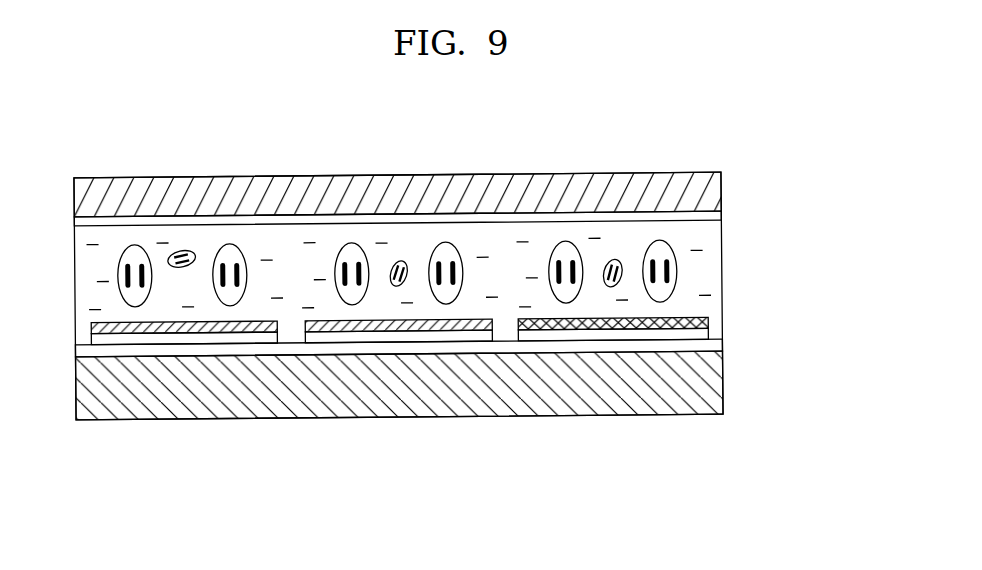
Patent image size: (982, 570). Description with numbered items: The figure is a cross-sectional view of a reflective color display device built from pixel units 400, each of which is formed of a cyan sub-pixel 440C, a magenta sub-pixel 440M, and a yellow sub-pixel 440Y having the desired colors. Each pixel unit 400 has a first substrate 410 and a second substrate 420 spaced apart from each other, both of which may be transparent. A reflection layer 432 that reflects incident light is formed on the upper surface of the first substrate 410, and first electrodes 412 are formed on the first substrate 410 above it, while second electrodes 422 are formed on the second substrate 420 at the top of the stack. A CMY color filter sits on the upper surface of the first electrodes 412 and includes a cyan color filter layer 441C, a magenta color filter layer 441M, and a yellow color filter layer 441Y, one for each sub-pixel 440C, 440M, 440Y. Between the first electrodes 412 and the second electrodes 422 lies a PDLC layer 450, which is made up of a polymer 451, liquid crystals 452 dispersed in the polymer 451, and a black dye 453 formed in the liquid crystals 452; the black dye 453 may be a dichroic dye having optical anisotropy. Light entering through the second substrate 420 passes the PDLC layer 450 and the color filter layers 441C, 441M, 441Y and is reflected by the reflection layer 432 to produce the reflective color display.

The pixel unit 400 is at (738, 162).
The second substrate 420 is at (722, 195).
The second electrode 422 is at (722, 218).
The PDLC layer 450 is at (474, 281).
The polymer 451 is at (704, 253).
The liquid crystals 452 is at (666, 300).
The black dye 453 is at (666, 282).
The cyan sub-pixel 440C is at (78, 155).
The magenta sub-pixel 440M is at (293, 156).
The yellow sub-pixel 440Y is at (717, 157).
The cyan color filter layer 441C is at (151, 326).
The magenta color filter layer 441M is at (365, 326).
The yellow color filter layer 441Y is at (578, 326).
The first electrode 412 is at (233, 337).
The reflection layer 432 is at (722, 348).
The first substrate 410 is at (722, 386).